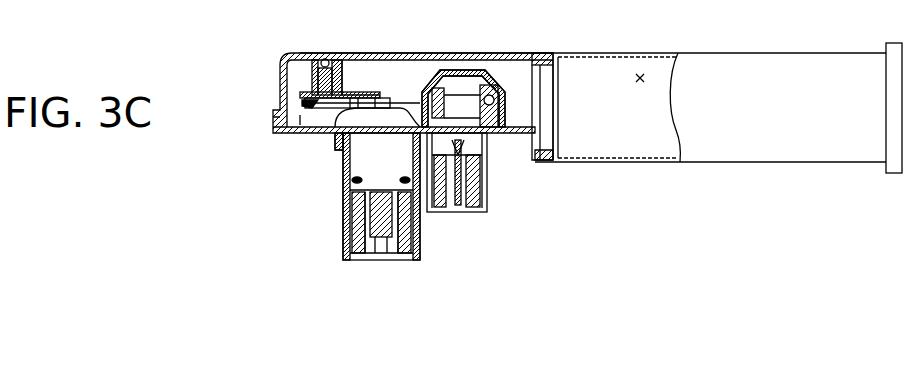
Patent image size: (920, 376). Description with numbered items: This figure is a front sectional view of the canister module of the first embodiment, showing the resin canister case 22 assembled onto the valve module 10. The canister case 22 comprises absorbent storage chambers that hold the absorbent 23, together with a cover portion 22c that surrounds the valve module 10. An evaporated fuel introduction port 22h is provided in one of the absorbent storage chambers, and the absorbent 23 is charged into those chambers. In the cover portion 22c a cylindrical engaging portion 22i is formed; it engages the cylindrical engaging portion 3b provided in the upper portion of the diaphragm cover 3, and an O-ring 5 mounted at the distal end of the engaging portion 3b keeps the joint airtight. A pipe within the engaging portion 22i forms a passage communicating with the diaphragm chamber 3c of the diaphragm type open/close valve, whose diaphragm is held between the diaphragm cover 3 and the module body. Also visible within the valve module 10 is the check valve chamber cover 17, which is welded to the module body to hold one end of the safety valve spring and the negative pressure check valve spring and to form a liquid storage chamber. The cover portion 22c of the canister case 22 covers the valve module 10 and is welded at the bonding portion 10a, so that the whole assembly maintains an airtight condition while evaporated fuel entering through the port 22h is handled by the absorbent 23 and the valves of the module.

The canister case 22 is at (556, 53).
The cover portion 22c is at (375, 53).
The cylindrical engaging portion 22i is at (318, 60).
The evaporated fuel introduction port 22h is at (533, 97).
The absorbent 23 is at (641, 84).
The check valve chamber cover 17 is at (470, 70).
The O-ring 5 is at (315, 68).
The diaphragm cover 3 is at (300, 92).
The cylindrical engaging portion 3b is at (308, 84).
The diaphragm chamber 3c is at (352, 112).
The valve module 10 is at (327, 147).
The bonding portion 10a is at (276, 128).